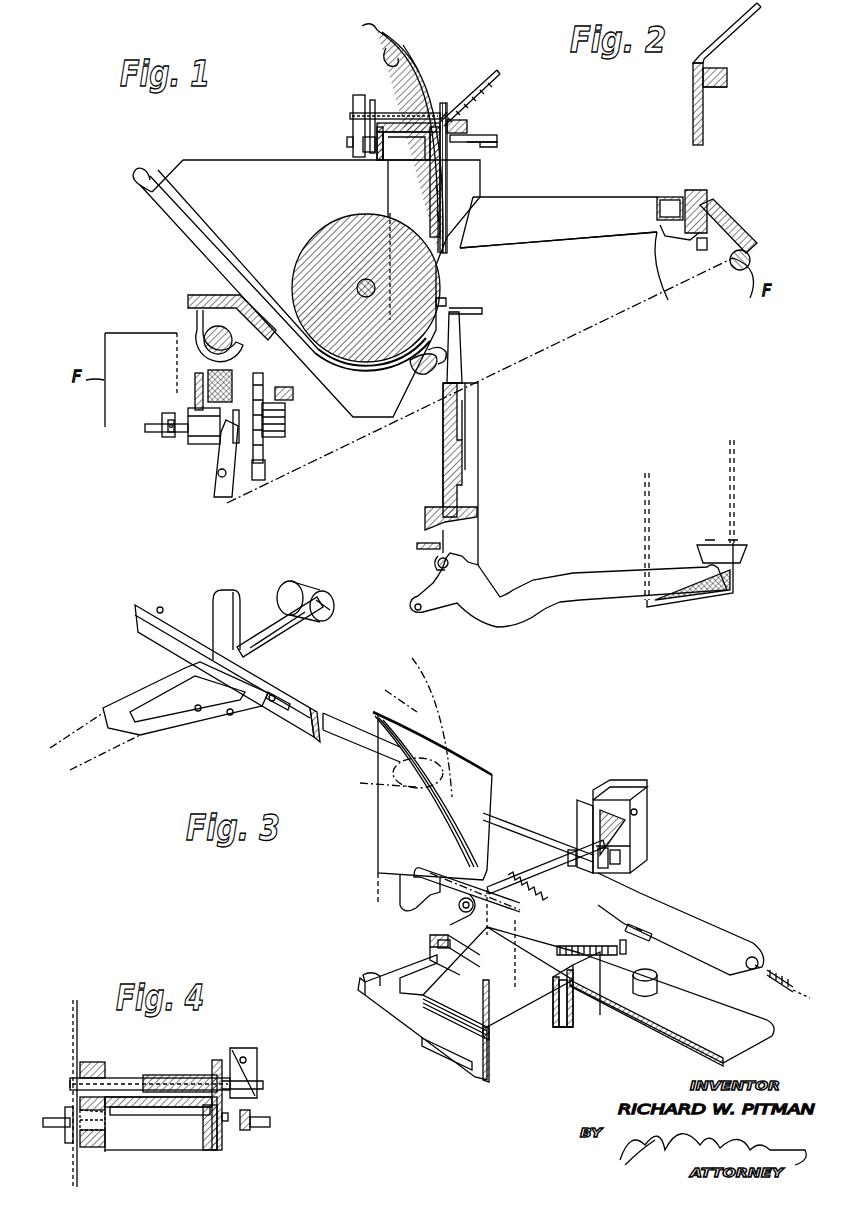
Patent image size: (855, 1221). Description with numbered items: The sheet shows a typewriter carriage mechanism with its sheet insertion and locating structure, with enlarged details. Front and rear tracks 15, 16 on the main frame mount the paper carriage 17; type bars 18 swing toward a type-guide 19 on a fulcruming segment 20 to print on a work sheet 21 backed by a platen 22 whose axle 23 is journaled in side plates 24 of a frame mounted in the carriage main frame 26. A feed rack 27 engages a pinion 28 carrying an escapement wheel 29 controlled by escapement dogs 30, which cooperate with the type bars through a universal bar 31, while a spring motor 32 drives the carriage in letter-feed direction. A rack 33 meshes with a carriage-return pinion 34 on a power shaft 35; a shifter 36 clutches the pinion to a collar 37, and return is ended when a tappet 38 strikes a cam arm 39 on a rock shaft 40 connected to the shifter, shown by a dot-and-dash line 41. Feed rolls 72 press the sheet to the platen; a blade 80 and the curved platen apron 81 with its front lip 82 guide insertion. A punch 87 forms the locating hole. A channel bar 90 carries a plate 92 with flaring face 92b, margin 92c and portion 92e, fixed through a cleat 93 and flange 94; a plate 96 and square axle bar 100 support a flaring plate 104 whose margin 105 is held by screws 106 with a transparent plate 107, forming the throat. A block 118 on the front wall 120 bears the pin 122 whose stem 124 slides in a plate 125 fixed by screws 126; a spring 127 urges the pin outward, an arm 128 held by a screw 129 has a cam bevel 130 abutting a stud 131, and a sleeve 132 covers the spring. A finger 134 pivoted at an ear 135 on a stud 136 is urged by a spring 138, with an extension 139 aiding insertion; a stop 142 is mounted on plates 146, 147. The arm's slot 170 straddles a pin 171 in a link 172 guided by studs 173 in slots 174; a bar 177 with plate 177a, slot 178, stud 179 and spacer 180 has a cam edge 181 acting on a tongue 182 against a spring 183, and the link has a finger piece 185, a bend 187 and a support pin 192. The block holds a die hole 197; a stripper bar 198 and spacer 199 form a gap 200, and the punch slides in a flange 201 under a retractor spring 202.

In FIG. 1, the front track 15 is at (700, 196).
In FIG. 1, the rear track 16 is at (200, 322).
In FIG. 1, the paper carriage 17 is at (489, 244).
In FIG. 1, the type bars 18 is at (616, 568).
In FIG. 1, the type-guide 19 is at (482, 310).
In FIG. 1, the type-bar fulcruming segment 20 is at (480, 474).
In FIG. 1, the work sheet 21 is at (182, 196).
In FIG. 3, the work sheet 21 is at (486, 790).
In FIG. 4, the work sheet 21 is at (80, 1038).
In FIG. 1, the platen 22 is at (330, 222).
In FIG. 1, the axle 23 is at (357, 285).
In FIG. 1, the side plates 24 is at (260, 160).
In FIG. 1, the main frame of the carriage 26 is at (212, 292).
In FIG. 1, the feed rack 27 is at (290, 387).
In FIG. 1, the pinion 28 is at (285, 420).
In FIG. 1, the escapement wheel 29 is at (266, 448).
In FIG. 1, the escapement dogs 30 is at (266, 468).
In FIG. 1, the universal bar 31 is at (417, 546).
In FIG. 1, the spring motor 32 is at (236, 372).
In FIG. 1, the rack 33 is at (193, 376).
In FIG. 1, the carriage-return pinion 34 is at (208, 444).
In FIG. 1, the power shaft 35 is at (166, 412).
In FIG. 1, the shifter 36 is at (214, 476).
In FIG. 1, the clutch collar 37 is at (172, 432).
In FIG. 1, the tappet 38 is at (716, 212).
In FIG. 1, the cam arm 39 is at (703, 252).
In FIG. 1, the rock shaft 40 is at (752, 258).
In FIG. 1, the dot-and-dash line 41 is at (600, 320).
In FIG. 1, the feed rolls 72 is at (432, 366).
In FIG. 1, the blade guide 80 is at (200, 240).
In FIG. 1, the platen apron 81 is at (400, 366).
In FIG. 1, the front lip 82 is at (460, 322).
In FIG. 1, the punch 87 is at (470, 145).
In FIG. 4, the punch 87 is at (58, 1118).
In FIG. 1, the transverse bar 90 is at (410, 152).
In FIG. 3, the transverse bar 90 is at (576, 1004).
In FIG. 4, the transverse bar 90 is at (156, 1110).
In FIG. 1, the transverse plate 92 is at (404, 68).
In FIG. 1, the upper face 92b is at (408, 52).
In FIG. 1, the flaring lower margin 92c is at (438, 218).
In FIG. 1, the blade portion 92e is at (436, 196).
In FIG. 1, the cleat 93 is at (414, 113).
In FIG. 1, the horizontal flange 94 is at (412, 122).
In FIG. 3, the plate 96 is at (684, 1040).
In FIG. 1, the square axle bar 100 is at (466, 119).
In FIG. 2, the square axle bar 100 is at (728, 76).
In FIG. 1, the flaring plate 104 is at (478, 92).
In FIG. 2, the flaring plate 104 is at (722, 40).
In FIG. 2, the lower margin 105 is at (712, 88).
In FIG. 2, the screws 106 is at (693, 70).
In FIG. 1, the transparent plate 107 is at (444, 200).
In FIG. 2, the transparent plate 107 is at (693, 118).
In FIG. 1, the block 118 is at (428, 96).
In FIG. 3, the block 118 is at (488, 982).
In FIG. 4, the block 118 is at (98, 1062).
In FIG. 3, the front wall 120 is at (566, 1026).
In FIG. 4, the front wall 120 is at (98, 1150).
In FIG. 3, the pin 122 is at (522, 878).
In FIG. 4, the pin 122 is at (122, 1076).
In FIG. 3, the reduced stem 124 is at (572, 868).
In FIG. 4, the reduced stem 124 is at (220, 1060).
In FIG. 1, the plate 125 is at (380, 126).
In FIG. 3, the plate 125 is at (578, 822).
In FIG. 4, the plate 125 is at (214, 1150).
In FIG. 4, the screws 126 is at (226, 1122).
In FIG. 3, the spring 127 is at (530, 880).
In FIG. 4, the spring 127 is at (172, 1108).
In FIG. 1, the block-like arm 128 is at (353, 108).
In FIG. 3, the block-like arm 128 is at (612, 794).
In FIG. 4, the block-like arm 128 is at (254, 1056).
In FIG. 3, the screw 129 is at (602, 798).
In FIG. 4, the screw 129 is at (248, 1040).
In FIG. 3, the cam bevel 130 is at (632, 846).
In FIG. 4, the cam bevel 130 is at (258, 1082).
In FIG. 1, the camming stud 131 is at (370, 102).
In FIG. 3, the camming stud 131 is at (642, 816).
In FIG. 4, the sleeve 132 is at (166, 1074).
In FIG. 1, the sheet holding finger 134 is at (442, 116).
In FIG. 3, the sheet holding finger 134 is at (514, 968).
In FIG. 3, the ear 135 is at (650, 992).
In FIG. 3, the headed shoulder stud 136 is at (653, 976).
In FIG. 3, the spring 138 is at (606, 944).
In FIG. 3, the lateral extension 139 is at (426, 870).
In FIG. 1, the stop 142 is at (448, 300).
In FIG. 1, the plate 146 is at (386, 196).
In FIG. 1, the intermediate plate 147 is at (360, 366).
In FIG. 3, the slot 170 is at (620, 858).
In FIG. 1, the pin 171 is at (350, 137).
In FIG. 3, the pin 171 is at (622, 870).
In FIG. 4, the pin 171 is at (270, 1121).
In FIG. 1, the transverse link 172 is at (368, 153).
In FIG. 3, the transverse link 172 is at (526, 812).
In FIG. 4, the transverse link 172 is at (250, 1114).
In FIG. 3, the headed shoulder studs 173 is at (280, 696).
In FIG. 3, the slots 174 is at (296, 698).
In FIG. 3, the bar 177 is at (98, 750).
In FIG. 3, the horizontal plate 177a is at (146, 728).
In FIG. 3, the slot 178 is at (280, 636).
In FIG. 3, the headed stud 179 is at (328, 610).
In FIG. 3, the spacer 180 is at (298, 586).
In FIG. 3, the cam edge 181 is at (196, 712).
In FIG. 3, the tongue 182 is at (232, 715).
In FIG. 3, the spring 183 is at (796, 974).
In FIG. 3, the finger piece 185 is at (228, 594).
In FIG. 3, the bend 187 is at (640, 880).
In FIG. 3, the pin 192 is at (162, 606).
In FIG. 4, the die hole 197 is at (100, 1120).
In FIG. 3, the guide and stripper bar 198 is at (428, 942).
In FIG. 4, the guide and stripper bar 198 is at (68, 1144).
In FIG. 3, the spacer 199 is at (556, 1026).
In FIG. 3, the work-sheet-receiving gap 200 is at (444, 944).
In FIG. 4, the work-sheet-receiving gap 200 is at (69, 1084).
In FIG. 3, the flange 201 is at (474, 1078).
In FIG. 3, the retractor spring 202 is at (398, 1030).